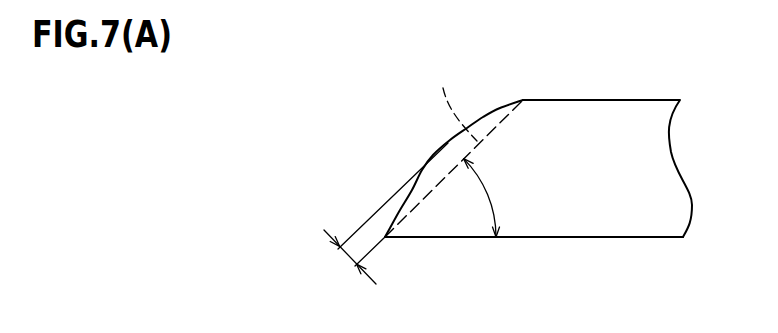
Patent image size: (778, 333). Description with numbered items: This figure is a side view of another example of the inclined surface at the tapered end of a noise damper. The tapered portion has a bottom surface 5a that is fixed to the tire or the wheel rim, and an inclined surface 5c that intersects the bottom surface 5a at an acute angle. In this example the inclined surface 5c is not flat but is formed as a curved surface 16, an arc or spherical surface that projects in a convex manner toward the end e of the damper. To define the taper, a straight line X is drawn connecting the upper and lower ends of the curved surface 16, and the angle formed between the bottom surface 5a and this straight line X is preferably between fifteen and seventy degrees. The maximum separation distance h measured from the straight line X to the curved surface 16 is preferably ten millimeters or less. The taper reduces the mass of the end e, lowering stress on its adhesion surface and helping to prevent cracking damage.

The inclined surface 5c is at (456, 122).
The curved surface 16 is at (482, 118).
The bottom surface 5a is at (618, 238).
The end e is at (433, 148).
The straight line X is at (454, 93).
The maximum separation distance h is at (350, 264).